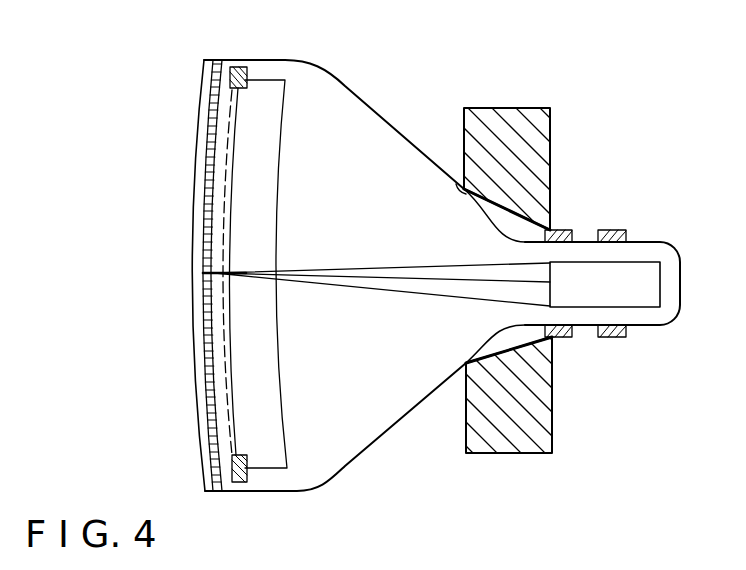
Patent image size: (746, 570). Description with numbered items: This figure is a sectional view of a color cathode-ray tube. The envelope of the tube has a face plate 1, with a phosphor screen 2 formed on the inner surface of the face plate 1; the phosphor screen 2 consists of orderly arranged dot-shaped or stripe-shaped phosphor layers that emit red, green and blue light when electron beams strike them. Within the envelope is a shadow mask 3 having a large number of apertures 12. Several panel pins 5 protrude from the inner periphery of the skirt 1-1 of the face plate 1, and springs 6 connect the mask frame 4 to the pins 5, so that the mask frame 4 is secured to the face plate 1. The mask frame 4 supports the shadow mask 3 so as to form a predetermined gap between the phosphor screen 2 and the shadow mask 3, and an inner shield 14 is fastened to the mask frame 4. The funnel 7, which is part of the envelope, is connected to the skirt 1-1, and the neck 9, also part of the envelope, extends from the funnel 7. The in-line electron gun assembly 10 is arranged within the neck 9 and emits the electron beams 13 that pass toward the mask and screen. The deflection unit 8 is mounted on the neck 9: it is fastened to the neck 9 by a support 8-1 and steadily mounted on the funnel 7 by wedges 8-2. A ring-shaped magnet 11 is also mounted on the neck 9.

The face plate 1 is at (192, 220).
The skirt 1-1 is at (214, 60).
The phosphor screen 2 is at (203, 266).
The shadow mask 3 is at (226, 308).
The mask frame 4 is at (250, 68).
The panel pins 5 is at (243, 57).
The springs 6 is at (240, 484).
The funnel 7 is at (358, 100).
The deflection unit 8 is at (548, 414).
The support 8-1 is at (561, 229).
The wedges 8-2 is at (458, 185).
The neck 9 is at (676, 238).
The in-line electron gun assembly 10 is at (637, 262).
The ring-shaped magnet 11 is at (612, 338).
The apertures 12 is at (222, 382).
The ultrasonic beam paths 13 is at (399, 292).
The inner shield 14 is at (283, 105).